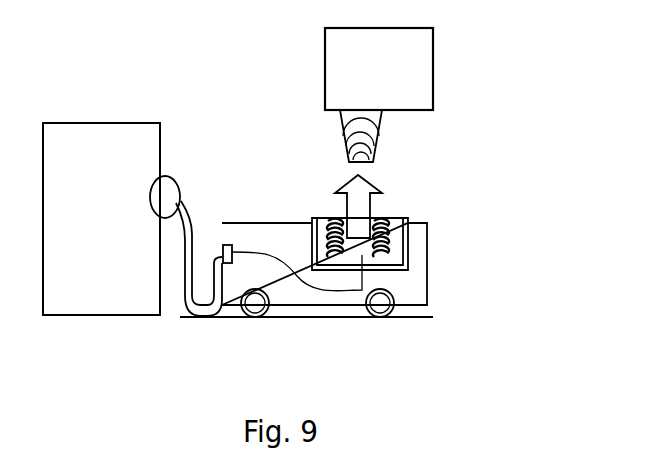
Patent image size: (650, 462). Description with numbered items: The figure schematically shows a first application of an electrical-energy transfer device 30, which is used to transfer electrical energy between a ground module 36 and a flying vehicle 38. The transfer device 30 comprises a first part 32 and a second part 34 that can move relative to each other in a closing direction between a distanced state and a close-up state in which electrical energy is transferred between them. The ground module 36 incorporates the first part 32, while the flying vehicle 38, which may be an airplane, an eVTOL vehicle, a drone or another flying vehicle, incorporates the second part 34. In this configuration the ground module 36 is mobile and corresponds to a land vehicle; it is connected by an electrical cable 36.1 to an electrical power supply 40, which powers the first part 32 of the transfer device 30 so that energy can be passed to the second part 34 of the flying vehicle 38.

The electrical-energy transfer device 30 is at (405, 202).
The first part 32 is at (403, 237).
The second part 34 is at (385, 127).
The ground module 36 is at (424, 281).
The electrical cable 36.1 is at (194, 232).
The flying vehicle 38 is at (412, 74).
The electrical power supply 40 is at (167, 188).